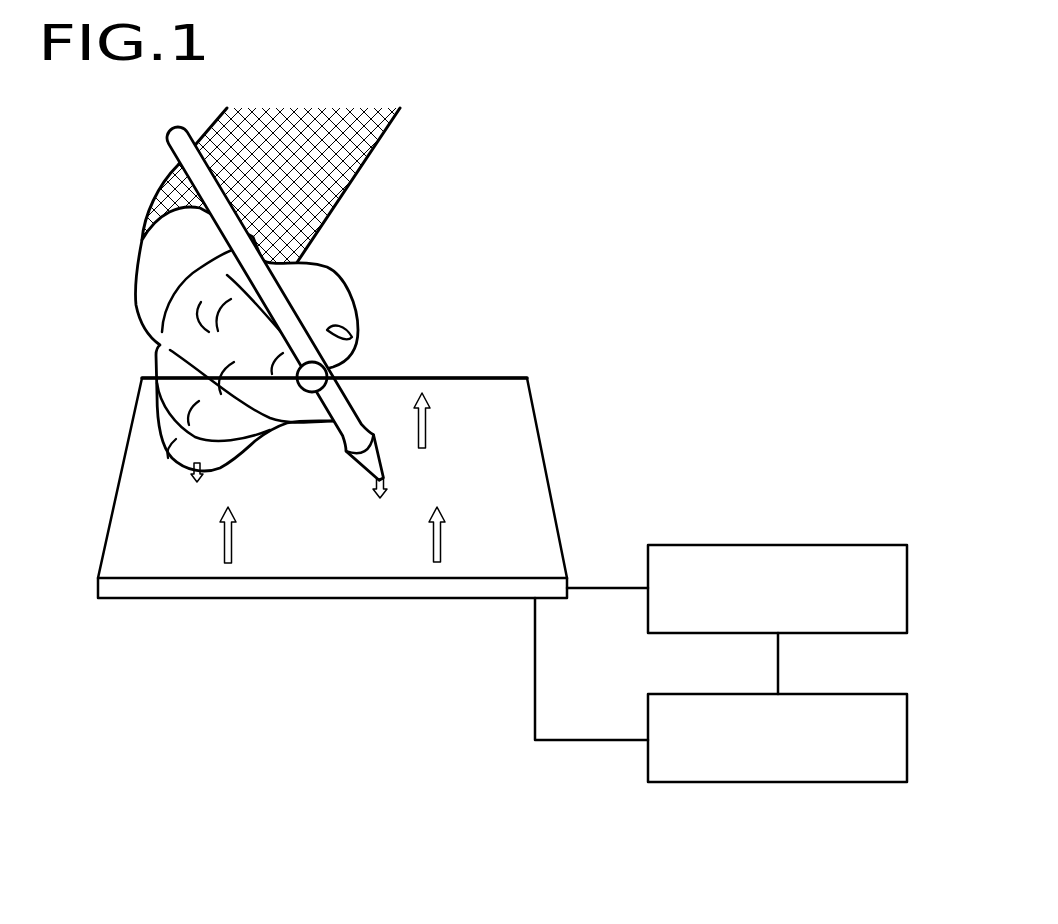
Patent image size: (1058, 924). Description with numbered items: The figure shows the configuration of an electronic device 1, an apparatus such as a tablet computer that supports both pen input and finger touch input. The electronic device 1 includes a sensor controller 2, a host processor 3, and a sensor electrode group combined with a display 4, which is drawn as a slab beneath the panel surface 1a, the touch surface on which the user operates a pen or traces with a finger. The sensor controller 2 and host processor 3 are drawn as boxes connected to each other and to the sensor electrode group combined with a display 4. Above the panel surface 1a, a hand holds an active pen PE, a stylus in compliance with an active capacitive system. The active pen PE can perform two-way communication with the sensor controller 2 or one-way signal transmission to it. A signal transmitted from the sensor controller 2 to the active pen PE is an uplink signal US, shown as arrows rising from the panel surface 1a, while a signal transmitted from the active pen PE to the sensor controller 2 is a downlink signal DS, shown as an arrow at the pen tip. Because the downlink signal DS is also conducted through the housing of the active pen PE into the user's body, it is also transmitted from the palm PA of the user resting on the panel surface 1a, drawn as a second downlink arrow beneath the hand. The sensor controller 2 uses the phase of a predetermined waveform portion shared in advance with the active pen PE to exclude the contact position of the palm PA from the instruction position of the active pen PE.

The electronic device 1 is at (700, 415).
The panel surface 1a is at (494, 388).
The sensor controller 2 is at (910, 588).
The host processor 3 is at (910, 740).
The sensor electrode group combined with a display 4 is at (97, 590).
The active pen PE is at (168, 135).
The palm PA is at (163, 427).
The uplink signal US is at (431, 430).
The downlink signal DS is at (206, 477).